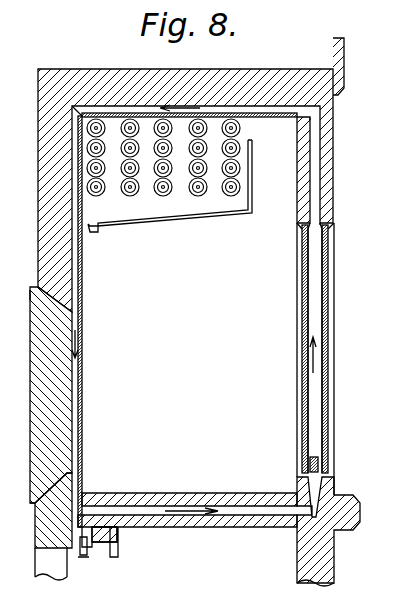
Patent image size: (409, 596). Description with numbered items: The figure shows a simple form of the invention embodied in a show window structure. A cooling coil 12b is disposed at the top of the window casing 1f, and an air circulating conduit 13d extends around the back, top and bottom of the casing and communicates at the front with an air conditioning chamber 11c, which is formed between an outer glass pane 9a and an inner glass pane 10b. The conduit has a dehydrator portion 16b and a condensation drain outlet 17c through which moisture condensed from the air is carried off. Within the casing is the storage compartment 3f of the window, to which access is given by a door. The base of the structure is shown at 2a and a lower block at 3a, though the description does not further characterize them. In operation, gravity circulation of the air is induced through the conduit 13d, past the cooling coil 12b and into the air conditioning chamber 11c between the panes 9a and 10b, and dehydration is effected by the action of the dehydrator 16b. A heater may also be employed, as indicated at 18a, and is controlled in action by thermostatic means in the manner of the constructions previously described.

The window casing 1f is at (52, 148).
The base 2a is at (15, 307).
The base block 3a is at (45, 358).
The storage compartment 3f is at (189, 305).
The outer glass pane 9a is at (327, 358).
The inner glass pane 10b is at (302, 331).
The air conditioning chamber 11c is at (313, 307).
The cooling coil 12b is at (186, 194).
The air circulating conduit 13d is at (78, 318).
The dehydrator 16b is at (129, 108).
The condensation drain outlet 17c is at (90, 541).
The heater 18a is at (322, 455).